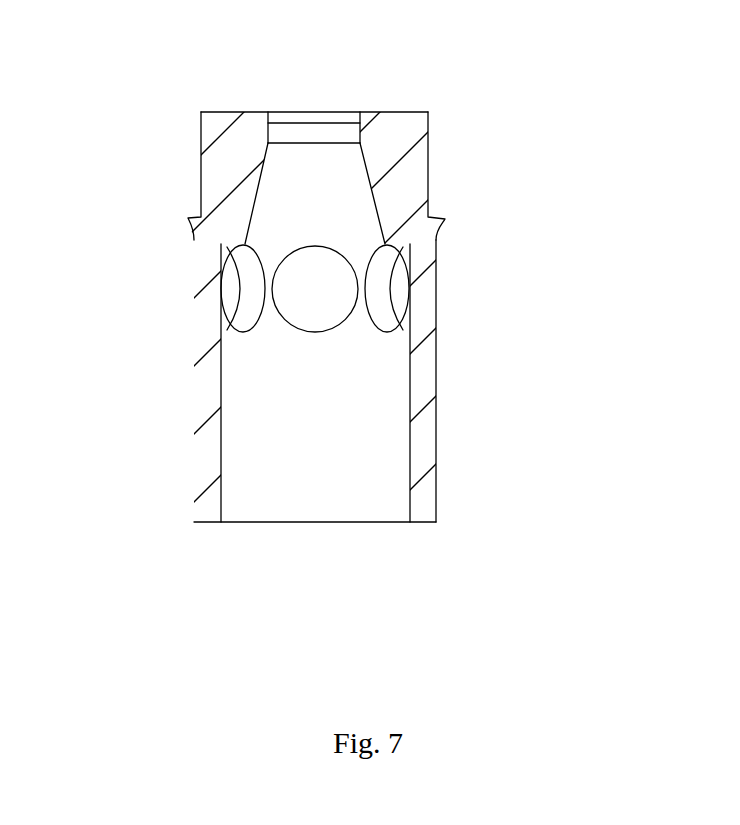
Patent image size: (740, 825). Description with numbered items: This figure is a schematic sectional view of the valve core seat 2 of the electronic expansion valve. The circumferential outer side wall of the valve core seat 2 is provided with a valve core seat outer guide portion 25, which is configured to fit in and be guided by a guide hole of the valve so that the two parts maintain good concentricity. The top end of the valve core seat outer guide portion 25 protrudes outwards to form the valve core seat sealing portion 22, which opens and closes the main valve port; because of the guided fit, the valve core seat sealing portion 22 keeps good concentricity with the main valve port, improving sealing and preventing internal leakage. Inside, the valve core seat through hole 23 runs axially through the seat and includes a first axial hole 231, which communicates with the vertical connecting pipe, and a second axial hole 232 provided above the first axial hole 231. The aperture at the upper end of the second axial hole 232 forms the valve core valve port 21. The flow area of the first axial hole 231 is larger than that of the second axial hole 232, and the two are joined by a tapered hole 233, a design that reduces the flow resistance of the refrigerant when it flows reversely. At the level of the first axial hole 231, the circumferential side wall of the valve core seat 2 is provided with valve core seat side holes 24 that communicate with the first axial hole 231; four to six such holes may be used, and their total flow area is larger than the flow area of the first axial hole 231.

The valve core seat 2 is at (370, 309).
The valve core valve port 21 is at (394, 68).
The valve core seat sealing portion 22 is at (230, 176).
The valve core seat through hole 23 is at (462, 292).
The first axial hole 231 is at (411, 383).
The second axial hole 232 is at (438, 103).
The tapered hole 233 is at (427, 181).
The valve core seat side hole 24 is at (212, 279).
The valve core seat outer guide portion 25 is at (226, 381).